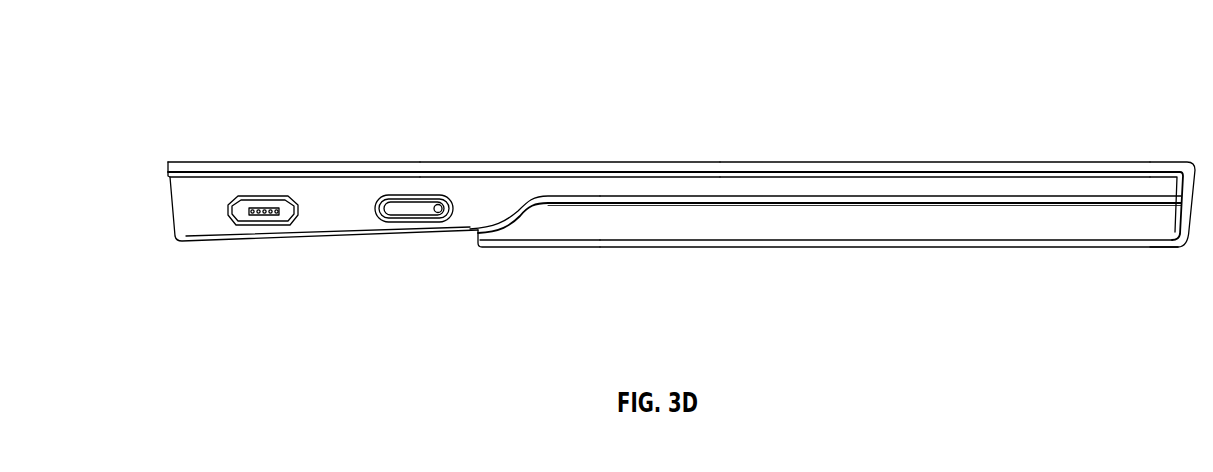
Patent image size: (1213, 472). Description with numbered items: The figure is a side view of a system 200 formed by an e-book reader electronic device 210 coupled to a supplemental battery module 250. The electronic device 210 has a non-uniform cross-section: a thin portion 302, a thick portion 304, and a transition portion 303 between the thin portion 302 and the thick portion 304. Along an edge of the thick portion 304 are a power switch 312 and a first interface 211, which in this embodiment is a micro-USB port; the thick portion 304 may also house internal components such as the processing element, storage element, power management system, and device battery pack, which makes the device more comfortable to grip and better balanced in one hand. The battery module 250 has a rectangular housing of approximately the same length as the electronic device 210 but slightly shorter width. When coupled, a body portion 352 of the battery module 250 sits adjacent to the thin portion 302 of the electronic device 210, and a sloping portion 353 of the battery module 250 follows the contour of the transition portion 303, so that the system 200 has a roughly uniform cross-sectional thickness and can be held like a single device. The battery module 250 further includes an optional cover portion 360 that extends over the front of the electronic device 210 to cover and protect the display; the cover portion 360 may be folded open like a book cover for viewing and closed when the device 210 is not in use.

The system 200 is at (139, 56).
The electronic device 210 is at (168, 207).
The first interface 211 is at (262, 218).
The power switch 312 is at (412, 221).
The thick portion 304 is at (282, 148).
The transition portion 303 is at (500, 150).
The thin portion 302 is at (893, 150).
The cover portion 360 is at (1098, 160).
The supplemental battery module 250 is at (770, 250).
The sloping portion 353 is at (511, 272).
The body portion 352 is at (897, 274).